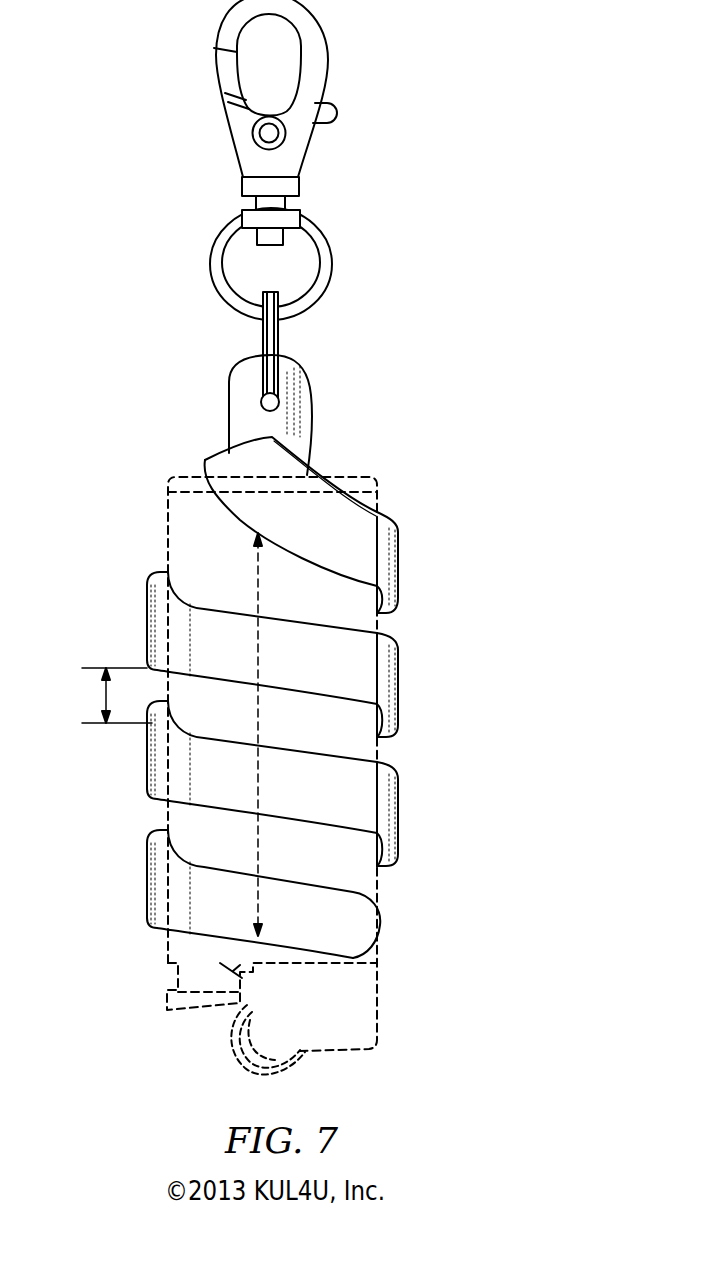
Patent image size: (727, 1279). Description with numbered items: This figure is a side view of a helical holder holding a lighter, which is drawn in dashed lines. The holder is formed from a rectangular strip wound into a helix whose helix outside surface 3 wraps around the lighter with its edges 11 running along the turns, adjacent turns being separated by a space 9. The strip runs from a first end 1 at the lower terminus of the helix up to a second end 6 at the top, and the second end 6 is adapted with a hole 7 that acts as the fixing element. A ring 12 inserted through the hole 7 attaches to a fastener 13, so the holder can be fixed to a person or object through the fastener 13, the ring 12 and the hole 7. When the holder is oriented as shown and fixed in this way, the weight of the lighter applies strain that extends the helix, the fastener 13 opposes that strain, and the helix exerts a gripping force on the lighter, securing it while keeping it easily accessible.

The first end 1 is at (355, 958).
The helix outside surface 3 is at (129, 880).
The second end 6 is at (296, 374).
The hole 7 is at (281, 399).
The space 9 is at (105, 697).
The edge 11 is at (397, 593).
The ring 12 is at (262, 334).
The fastener 13 is at (230, 127).